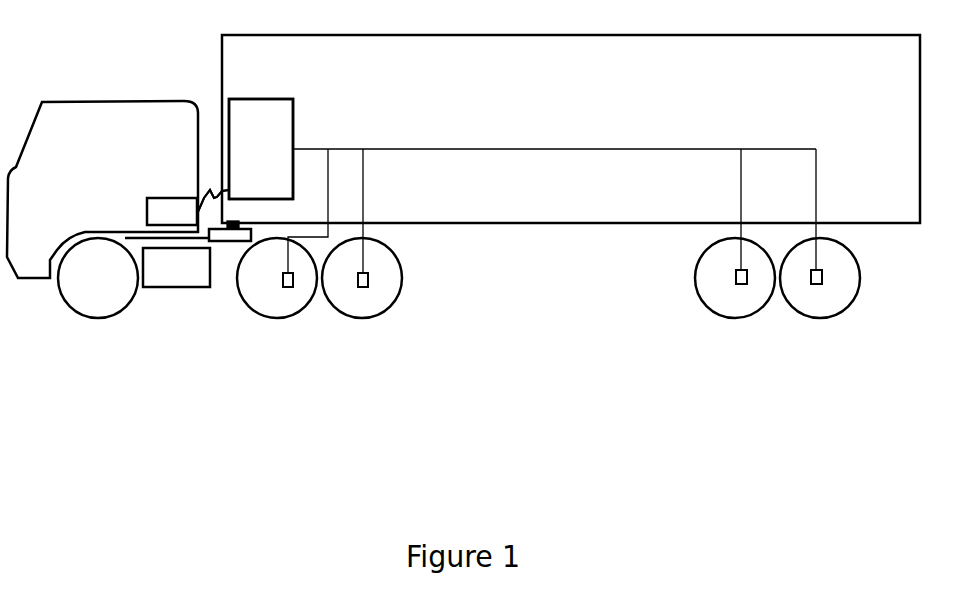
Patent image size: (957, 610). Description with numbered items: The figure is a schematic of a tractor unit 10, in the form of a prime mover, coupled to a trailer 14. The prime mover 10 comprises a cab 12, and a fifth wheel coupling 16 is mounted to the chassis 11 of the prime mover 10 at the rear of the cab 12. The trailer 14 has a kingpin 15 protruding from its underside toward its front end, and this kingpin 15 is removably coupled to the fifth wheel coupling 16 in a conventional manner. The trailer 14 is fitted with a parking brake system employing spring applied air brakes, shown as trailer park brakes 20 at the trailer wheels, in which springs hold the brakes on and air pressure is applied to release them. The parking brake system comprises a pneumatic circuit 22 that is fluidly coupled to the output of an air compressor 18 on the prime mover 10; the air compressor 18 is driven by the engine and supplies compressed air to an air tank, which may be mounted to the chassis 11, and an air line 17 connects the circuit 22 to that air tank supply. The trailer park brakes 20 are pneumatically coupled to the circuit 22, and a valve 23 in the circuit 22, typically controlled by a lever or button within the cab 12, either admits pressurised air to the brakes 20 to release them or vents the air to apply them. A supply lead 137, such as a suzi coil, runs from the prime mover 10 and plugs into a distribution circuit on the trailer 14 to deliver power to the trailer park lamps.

The tractor unit 10 is at (102, 72).
The chassis 11 is at (163, 250).
The cabin 12 is at (108, 209).
The trailer 14 is at (571, 176).
The kingpin 15 is at (233, 248).
The fifth wheel coupling 16 is at (222, 254).
The air line 17 is at (211, 170).
The supply lead 137 is at (174, 129).
The air compressor 18 is at (172, 211).
The trailer park brakes 20 is at (288, 300).
The pneumatic circuit 22 is at (261, 149).
The valve 23 is at (261, 149).